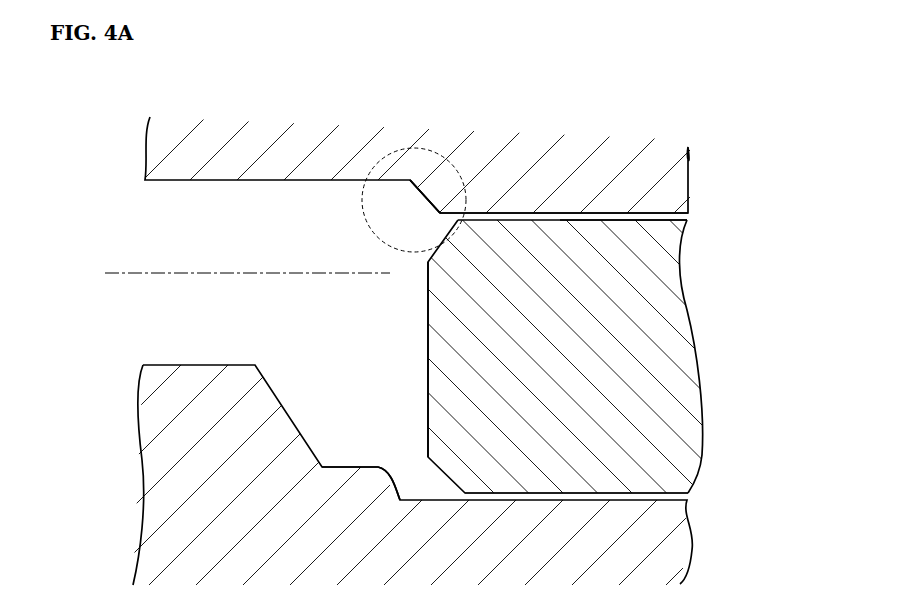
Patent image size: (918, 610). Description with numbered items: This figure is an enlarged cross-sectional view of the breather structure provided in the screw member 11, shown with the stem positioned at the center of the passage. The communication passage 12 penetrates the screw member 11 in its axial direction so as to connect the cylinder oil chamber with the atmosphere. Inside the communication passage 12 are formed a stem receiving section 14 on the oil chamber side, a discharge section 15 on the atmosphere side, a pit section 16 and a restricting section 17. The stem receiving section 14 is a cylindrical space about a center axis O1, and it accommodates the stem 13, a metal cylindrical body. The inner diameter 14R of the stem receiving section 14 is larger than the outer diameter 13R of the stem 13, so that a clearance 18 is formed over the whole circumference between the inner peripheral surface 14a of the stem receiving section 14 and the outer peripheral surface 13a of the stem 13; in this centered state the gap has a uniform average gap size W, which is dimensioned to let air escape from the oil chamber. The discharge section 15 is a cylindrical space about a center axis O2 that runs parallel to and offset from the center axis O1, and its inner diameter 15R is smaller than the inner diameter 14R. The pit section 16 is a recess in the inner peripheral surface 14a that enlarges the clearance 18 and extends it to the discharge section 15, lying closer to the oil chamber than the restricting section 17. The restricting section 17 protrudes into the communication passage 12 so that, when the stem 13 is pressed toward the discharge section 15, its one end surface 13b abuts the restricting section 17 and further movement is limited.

The screw member 11 is at (399, 78).
The communication passage 12 is at (287, 210).
The stem 13 is at (661, 305).
The outer peripheral surface of the stem 13a is at (688, 152).
The one end surface of the stem 13b is at (428, 322).
The outer diameter of the stem 13R is at (567, 493).
The stem receiving section 14 is at (626, 432).
The inner peripheral surface of the stem receiving section 14a is at (600, 220).
The inner diameter of the stem receiving section 14R is at (477, 493).
The discharge section 15 is at (183, 328).
The inner diameter of the discharge section 15R is at (228, 363).
The pit section 16 is at (415, 197).
The restricting section 17 is at (378, 465).
The clearance 18 is at (628, 230).
The average gap size W is at (648, 212).
The center axis of the stem receiving section O1 is at (770, 358).
The center axis of the discharge section O2 is at (118, 272).